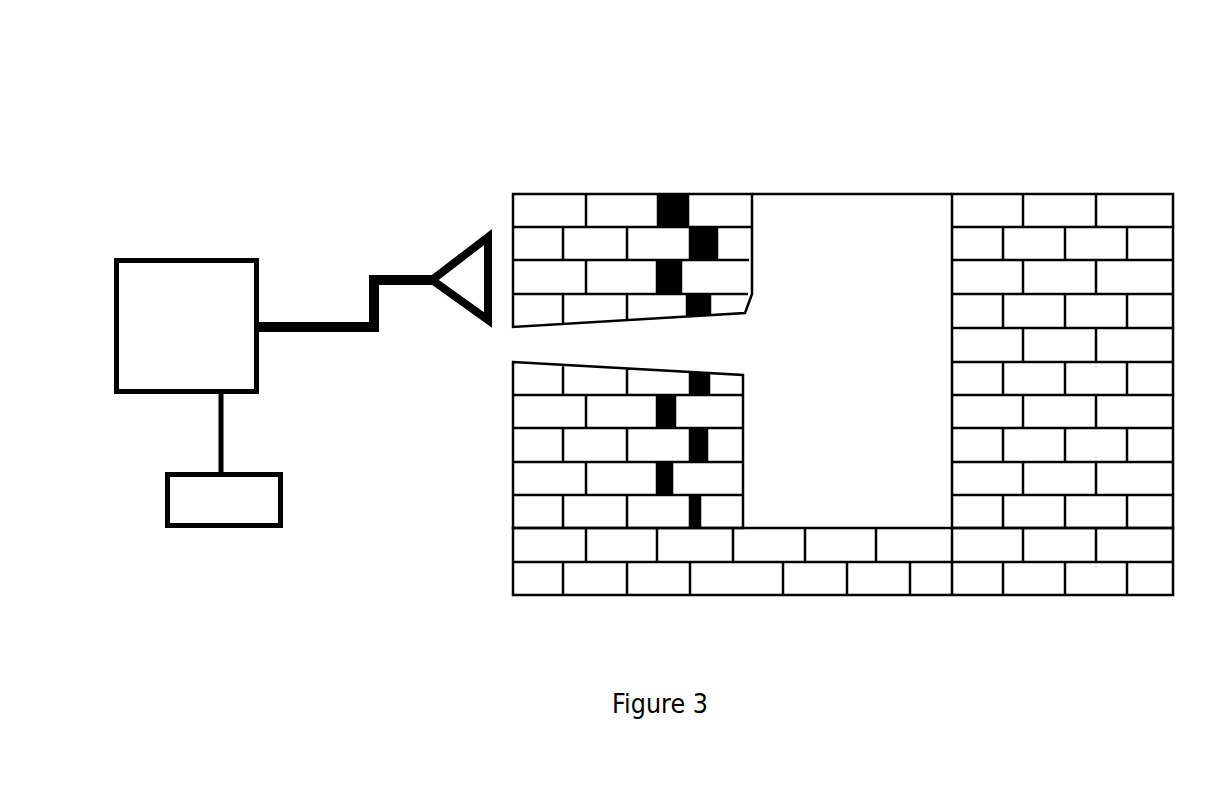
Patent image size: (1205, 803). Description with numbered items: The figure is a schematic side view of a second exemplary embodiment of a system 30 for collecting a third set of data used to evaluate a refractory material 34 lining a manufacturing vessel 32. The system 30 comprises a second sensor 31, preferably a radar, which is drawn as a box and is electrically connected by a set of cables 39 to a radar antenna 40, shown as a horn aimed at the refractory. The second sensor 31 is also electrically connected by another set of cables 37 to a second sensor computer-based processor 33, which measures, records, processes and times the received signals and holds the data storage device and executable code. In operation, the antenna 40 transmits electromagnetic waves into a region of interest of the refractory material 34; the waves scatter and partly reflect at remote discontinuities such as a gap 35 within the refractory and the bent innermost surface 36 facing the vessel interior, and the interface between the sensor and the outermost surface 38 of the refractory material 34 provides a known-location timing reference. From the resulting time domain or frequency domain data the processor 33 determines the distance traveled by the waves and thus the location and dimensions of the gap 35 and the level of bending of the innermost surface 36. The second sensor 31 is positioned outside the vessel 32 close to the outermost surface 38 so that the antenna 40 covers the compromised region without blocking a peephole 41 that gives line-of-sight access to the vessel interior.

The system 30 is at (379, 115).
The second sensor 31 is at (171, 258).
The manufacturing vessel 32 is at (782, 158).
The second sensor computer-based processor 33 is at (163, 502).
The refractory material 34 is at (1073, 208).
The gap 35 is at (650, 210).
The bent innermost surface 36 is at (680, 212).
The set of cables 37 is at (210, 423).
The outermost surface 38 is at (510, 550).
The set of cables 39 is at (350, 340).
The radar antenna 40 is at (450, 250).
The peephole 41 is at (497, 360).